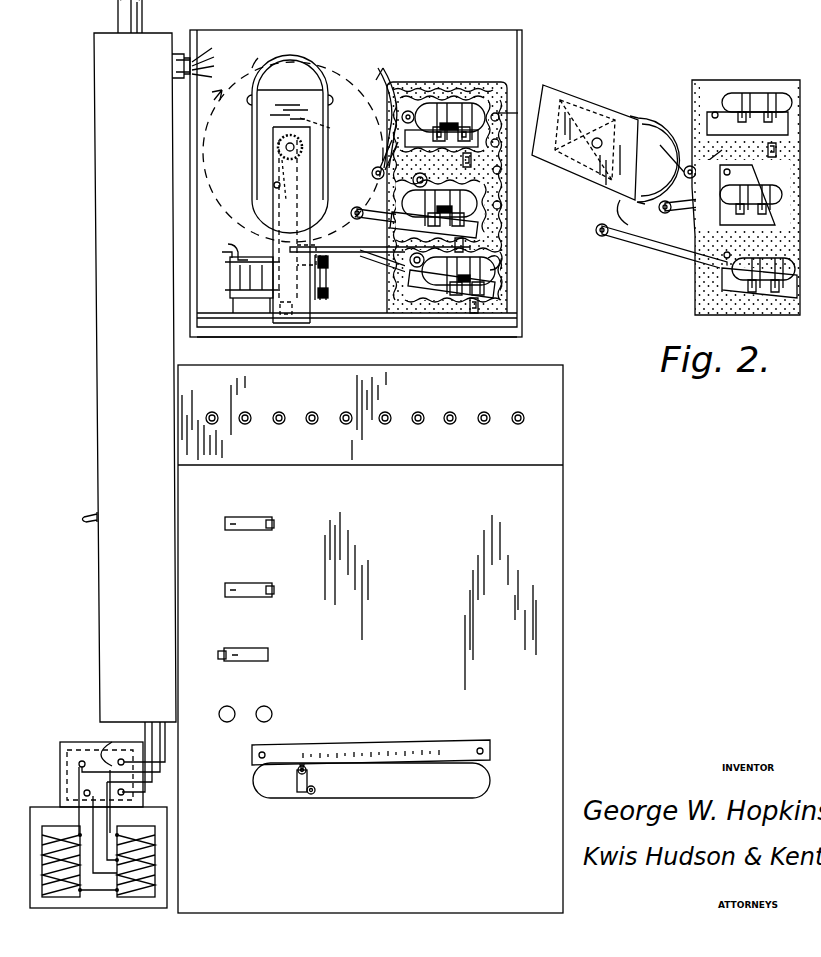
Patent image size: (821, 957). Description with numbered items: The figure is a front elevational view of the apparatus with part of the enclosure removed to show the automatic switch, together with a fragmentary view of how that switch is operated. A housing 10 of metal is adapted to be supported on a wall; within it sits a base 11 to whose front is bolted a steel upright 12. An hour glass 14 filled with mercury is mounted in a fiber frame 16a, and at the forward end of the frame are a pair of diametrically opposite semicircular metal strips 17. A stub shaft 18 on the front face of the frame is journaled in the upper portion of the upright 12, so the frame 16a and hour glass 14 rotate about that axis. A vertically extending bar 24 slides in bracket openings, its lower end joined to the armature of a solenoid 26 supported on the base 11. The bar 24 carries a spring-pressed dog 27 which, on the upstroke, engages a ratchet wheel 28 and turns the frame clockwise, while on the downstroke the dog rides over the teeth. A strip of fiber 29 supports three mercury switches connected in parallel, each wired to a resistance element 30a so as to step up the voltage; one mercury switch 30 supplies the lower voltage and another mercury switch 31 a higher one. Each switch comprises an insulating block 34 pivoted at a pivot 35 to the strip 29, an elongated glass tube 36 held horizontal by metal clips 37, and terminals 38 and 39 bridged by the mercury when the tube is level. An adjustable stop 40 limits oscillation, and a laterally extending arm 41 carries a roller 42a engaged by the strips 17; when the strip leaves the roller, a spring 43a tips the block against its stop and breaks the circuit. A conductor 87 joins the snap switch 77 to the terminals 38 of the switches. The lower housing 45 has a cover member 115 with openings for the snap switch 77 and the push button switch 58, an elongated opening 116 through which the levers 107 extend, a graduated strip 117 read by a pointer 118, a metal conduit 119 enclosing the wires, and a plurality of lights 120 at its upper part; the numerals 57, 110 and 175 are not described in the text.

In FIG. 1, the housing 10 is at (438, 44).
In FIG. 1, the base 11 is at (529, 316).
In FIG. 1, the upright 12 is at (300, 314).
In FIG. 1, the hour glass 14 is at (295, 82).
In FIG. 2, the hour glass 14 is at (586, 84).
In FIG. 1, the fiber frame 16a is at (366, 100).
In FIG. 2, the fiber frame 16a is at (664, 184).
In FIG. 1, the semicircular metal strips 17 is at (270, 62).
In FIG. 2, the semicircular metal strips 17 is at (656, 120).
In FIG. 1, the stub shaft 18 is at (337, 134).
In FIG. 1, the bar 24 is at (294, 225).
In FIG. 1, the solenoid 26 is at (244, 283).
In FIG. 1, the spring-pressed dog 27 is at (266, 177).
In FIG. 1, the ratchet wheel 28 is at (284, 145).
In FIG. 1, the strip of fiber 29 is at (452, 103).
In FIG. 1, the mercury switch 30 is at (462, 112).
In FIG. 2, the mercury switch 30 is at (735, 100).
In FIG. 1, the resistance element 30a is at (210, 819).
In FIG. 1, the mercury switch 31 is at (478, 210).
In FIG. 2, the mercury switch 31 is at (722, 205).
In FIG. 1, the insulating block 34 is at (405, 96).
In FIG. 1, the pivot 35 is at (388, 95).
In FIG. 1, the glass tube 36 is at (430, 108).
In FIG. 1, the metal clips 37 is at (470, 115).
In FIG. 1, the terminal 38 is at (426, 125).
In FIG. 1, the terminal 39 is at (439, 160).
In FIG. 1, the adjustable stop 40 is at (470, 342).
In FIG. 1, the arm 41 is at (358, 206).
In FIG. 1, the roller 42a is at (344, 280).
In FIG. 2, the roller 42a is at (603, 236).
In FIG. 1, the spring 43a is at (518, 240).
In FIG. 1, the housing 45 is at (560, 524).
In FIG. 1, the bracket 57 is at (245, 243).
In FIG. 1, the push button switch 58 is at (263, 707).
In FIG. 1, the snap switch 77 is at (252, 650).
In FIG. 1, the conductor 87 is at (508, 291).
In FIG. 1, the lever 107 is at (316, 790).
In FIG. 1, the wires 110 is at (496, 113).
In FIG. 1, the cover member 115 is at (548, 602).
In FIG. 1, the elongated opening 116 is at (503, 778).
In FIG. 1, the graduated strip 117 is at (473, 746).
In FIG. 1, the pointer 118 is at (303, 766).
In FIG. 1, the metal conduit 119 is at (118, 636).
In FIG. 1, the lights 120 is at (566, 378).
In FIG. 1, the switch box 175 is at (112, 820).